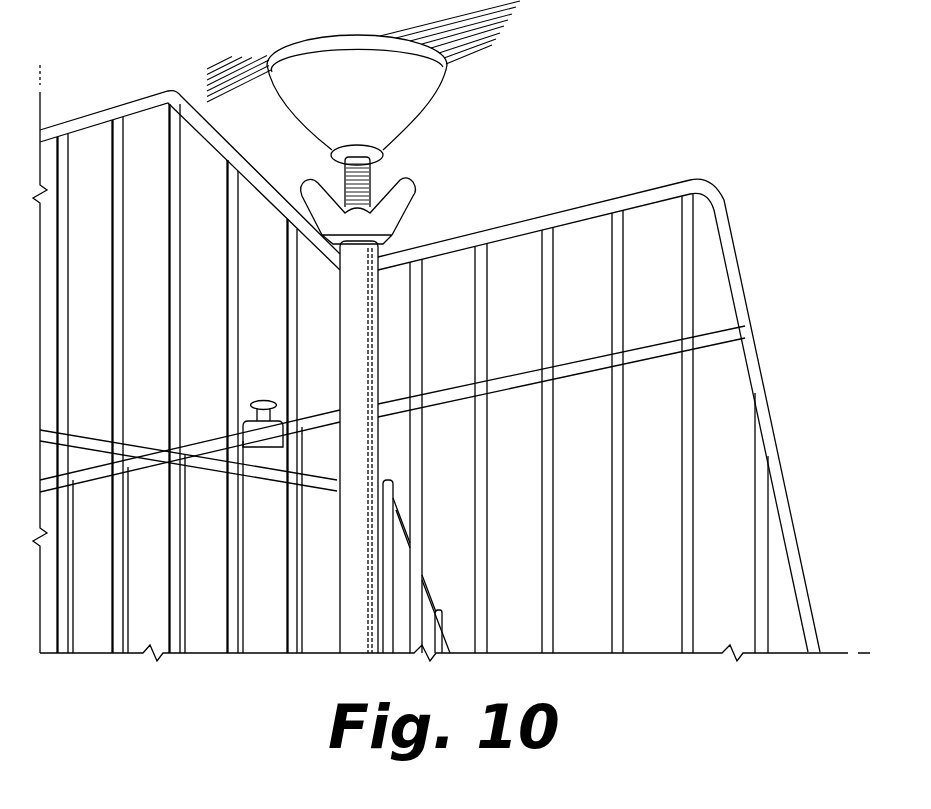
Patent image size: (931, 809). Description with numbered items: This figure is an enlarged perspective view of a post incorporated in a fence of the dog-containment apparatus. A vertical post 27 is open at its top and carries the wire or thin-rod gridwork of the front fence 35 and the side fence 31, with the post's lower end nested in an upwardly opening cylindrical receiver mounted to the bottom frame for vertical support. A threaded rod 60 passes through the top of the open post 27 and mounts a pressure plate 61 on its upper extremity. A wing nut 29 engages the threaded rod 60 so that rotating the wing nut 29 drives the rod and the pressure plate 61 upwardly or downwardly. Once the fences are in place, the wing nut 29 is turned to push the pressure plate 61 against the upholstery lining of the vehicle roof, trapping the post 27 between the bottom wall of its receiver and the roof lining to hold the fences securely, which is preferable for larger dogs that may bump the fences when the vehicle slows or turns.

The vertical post 27 is at (357, 340).
The wing nut 29 is at (407, 211).
The side fence 31 is at (756, 265).
The front fence 35 is at (435, 595).
The threaded rod 60 is at (371, 183).
The pressure plate 61 is at (418, 108).